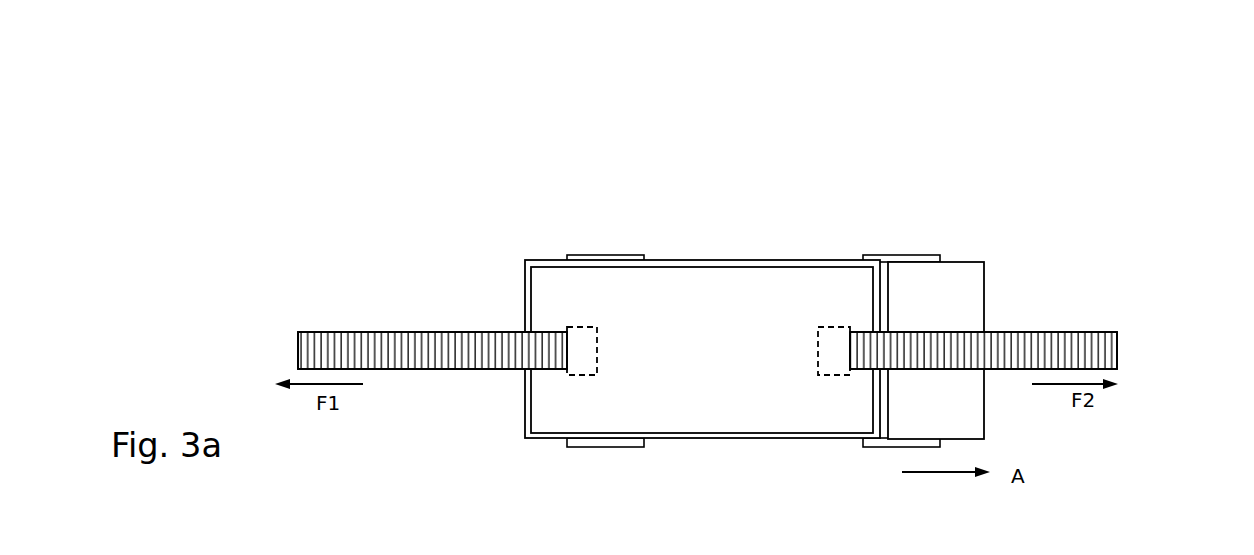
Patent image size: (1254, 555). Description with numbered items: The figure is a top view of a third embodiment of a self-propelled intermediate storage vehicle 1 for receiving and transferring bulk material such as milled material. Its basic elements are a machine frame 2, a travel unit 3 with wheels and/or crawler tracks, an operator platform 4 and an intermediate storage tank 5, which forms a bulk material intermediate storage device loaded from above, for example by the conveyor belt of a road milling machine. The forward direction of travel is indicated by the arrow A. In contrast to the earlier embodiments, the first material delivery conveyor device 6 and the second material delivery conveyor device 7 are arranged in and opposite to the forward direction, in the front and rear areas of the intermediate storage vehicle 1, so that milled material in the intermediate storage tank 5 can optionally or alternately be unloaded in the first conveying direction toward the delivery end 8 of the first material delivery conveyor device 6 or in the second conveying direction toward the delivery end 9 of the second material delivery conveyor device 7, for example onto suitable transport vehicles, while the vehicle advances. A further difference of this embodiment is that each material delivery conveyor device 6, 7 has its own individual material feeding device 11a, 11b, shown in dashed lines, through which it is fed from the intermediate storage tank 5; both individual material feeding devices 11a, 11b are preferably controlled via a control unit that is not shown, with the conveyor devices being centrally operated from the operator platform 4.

The intermediate storage vehicle 1 is at (777, 148).
The machine frame 2 is at (827, 264).
The travel unit 3 is at (605, 264).
The operator platform 4 is at (962, 287).
The intermediate storage tank 5 is at (757, 383).
The first material delivery conveyor device 6 is at (437, 345).
The second material delivery conveyor device 7 is at (990, 340).
The delivery end of the first material delivery conveyor device 8 is at (310, 353).
The delivery end of the second material delivery conveyor device 9 is at (1112, 347).
The individual material feeding device 11a is at (580, 377).
The individual material feeding device 11b is at (833, 362).